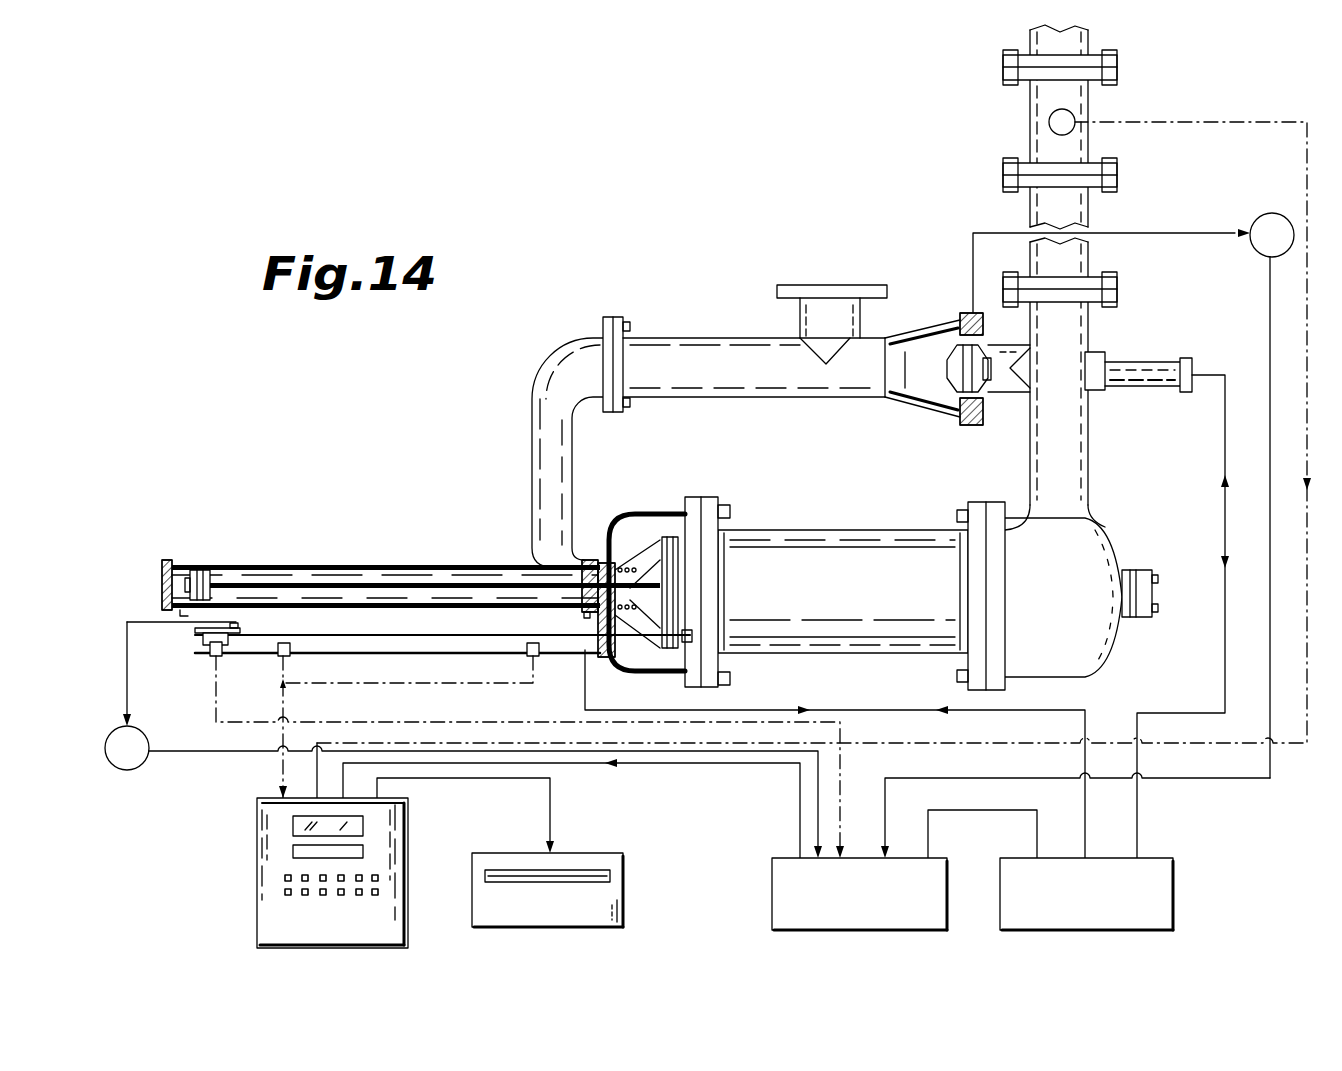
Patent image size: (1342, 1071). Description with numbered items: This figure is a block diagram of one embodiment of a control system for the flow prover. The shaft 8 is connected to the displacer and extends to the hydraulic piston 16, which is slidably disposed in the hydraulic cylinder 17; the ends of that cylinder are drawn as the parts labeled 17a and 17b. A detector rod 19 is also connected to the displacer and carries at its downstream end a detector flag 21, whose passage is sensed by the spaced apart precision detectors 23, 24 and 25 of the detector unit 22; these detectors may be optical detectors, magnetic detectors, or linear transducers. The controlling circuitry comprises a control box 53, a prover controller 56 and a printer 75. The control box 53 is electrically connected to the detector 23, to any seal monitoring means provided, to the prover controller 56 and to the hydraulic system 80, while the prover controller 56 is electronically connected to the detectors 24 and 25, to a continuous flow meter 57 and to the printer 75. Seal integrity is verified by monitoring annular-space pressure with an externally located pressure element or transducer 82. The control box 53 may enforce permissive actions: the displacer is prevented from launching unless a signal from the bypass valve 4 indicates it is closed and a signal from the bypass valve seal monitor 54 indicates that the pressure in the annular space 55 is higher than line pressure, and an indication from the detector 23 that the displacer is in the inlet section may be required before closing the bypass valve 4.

The bypass valve 4 is at (930, 352).
The shaft 8 is at (385, 582).
The hydraulic piston 16 is at (206, 568).
The hydraulic cylinder 17 is at (319, 562).
The cylinder end gland 17a is at (578, 612).
The cylinder end cap 17b is at (183, 614).
The detector rod 19 is at (421, 632).
The detector flag 21 is at (203, 640).
The detector unit 22 is at (413, 657).
The precision detector 23 is at (213, 657).
The precision detector 24 is at (281, 657).
The precision detector 25 is at (534, 658).
The control box 53 is at (788, 871).
The bypass valve seal monitor 54 is at (1277, 222).
The annular space 55 is at (968, 330).
The prover controller 56 is at (260, 838).
The continuous flow meter 57 is at (1067, 120).
The printer 75 is at (625, 868).
The hydraulic system 80 is at (1172, 904).
The pressure element or transducer 82 is at (114, 764).